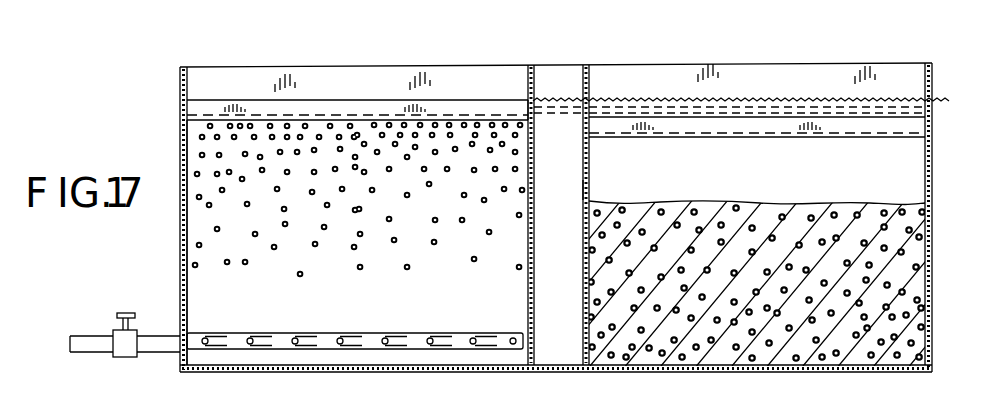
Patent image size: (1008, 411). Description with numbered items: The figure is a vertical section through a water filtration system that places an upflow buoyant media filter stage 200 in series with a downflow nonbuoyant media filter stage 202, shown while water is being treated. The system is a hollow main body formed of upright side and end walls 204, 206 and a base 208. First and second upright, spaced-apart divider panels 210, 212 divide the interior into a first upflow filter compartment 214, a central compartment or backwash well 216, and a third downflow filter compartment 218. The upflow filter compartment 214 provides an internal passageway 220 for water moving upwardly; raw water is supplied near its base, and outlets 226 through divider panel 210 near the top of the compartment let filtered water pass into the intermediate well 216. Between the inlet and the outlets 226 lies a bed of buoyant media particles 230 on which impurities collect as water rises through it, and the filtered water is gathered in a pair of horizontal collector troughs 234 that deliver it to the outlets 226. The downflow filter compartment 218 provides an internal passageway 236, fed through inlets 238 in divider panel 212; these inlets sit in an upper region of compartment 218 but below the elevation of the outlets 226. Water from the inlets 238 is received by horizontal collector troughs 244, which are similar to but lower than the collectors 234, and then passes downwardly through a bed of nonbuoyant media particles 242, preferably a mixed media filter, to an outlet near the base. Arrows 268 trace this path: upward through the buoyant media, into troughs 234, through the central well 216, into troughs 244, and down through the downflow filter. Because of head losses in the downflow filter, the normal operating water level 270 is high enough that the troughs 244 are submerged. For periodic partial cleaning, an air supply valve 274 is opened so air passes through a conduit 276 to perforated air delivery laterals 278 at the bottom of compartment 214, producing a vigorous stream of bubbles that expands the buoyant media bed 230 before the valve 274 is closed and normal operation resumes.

The upflow buoyant media filter stage 200 is at (447, 88).
The downflow nonbuoyant media filter stage 202 is at (773, 86).
The side wall 204 is at (556, 82).
The end wall 206 is at (924, 80).
The base 208 is at (555, 373).
The first divider panel 210 is at (531, 84).
The second divider panel 212 is at (585, 82).
The upflow filter compartment 214 is at (452, 297).
The central compartment or backwash well 216 is at (570, 324).
The downflow filter compartment 218 is at (864, 187).
The internal passageway 220 is at (202, 285).
The outlets 226 is at (531, 105).
The bed of buoyant media particles 230 is at (217, 173).
The horizontal collector troughs 234 is at (251, 107).
The internal passageway 236 is at (603, 187).
The inlets 238 is at (612, 140).
The bed of nonbuoyant media particles 242 is at (690, 360).
The horizontal collector troughs 244 is at (692, 125).
The arrows 268 is at (394, 108).
The water level 270 is at (834, 100).
The air supply valve 274 is at (125, 358).
The conduit 276 is at (232, 333).
The perforated air delivery laterals 278 is at (292, 350).